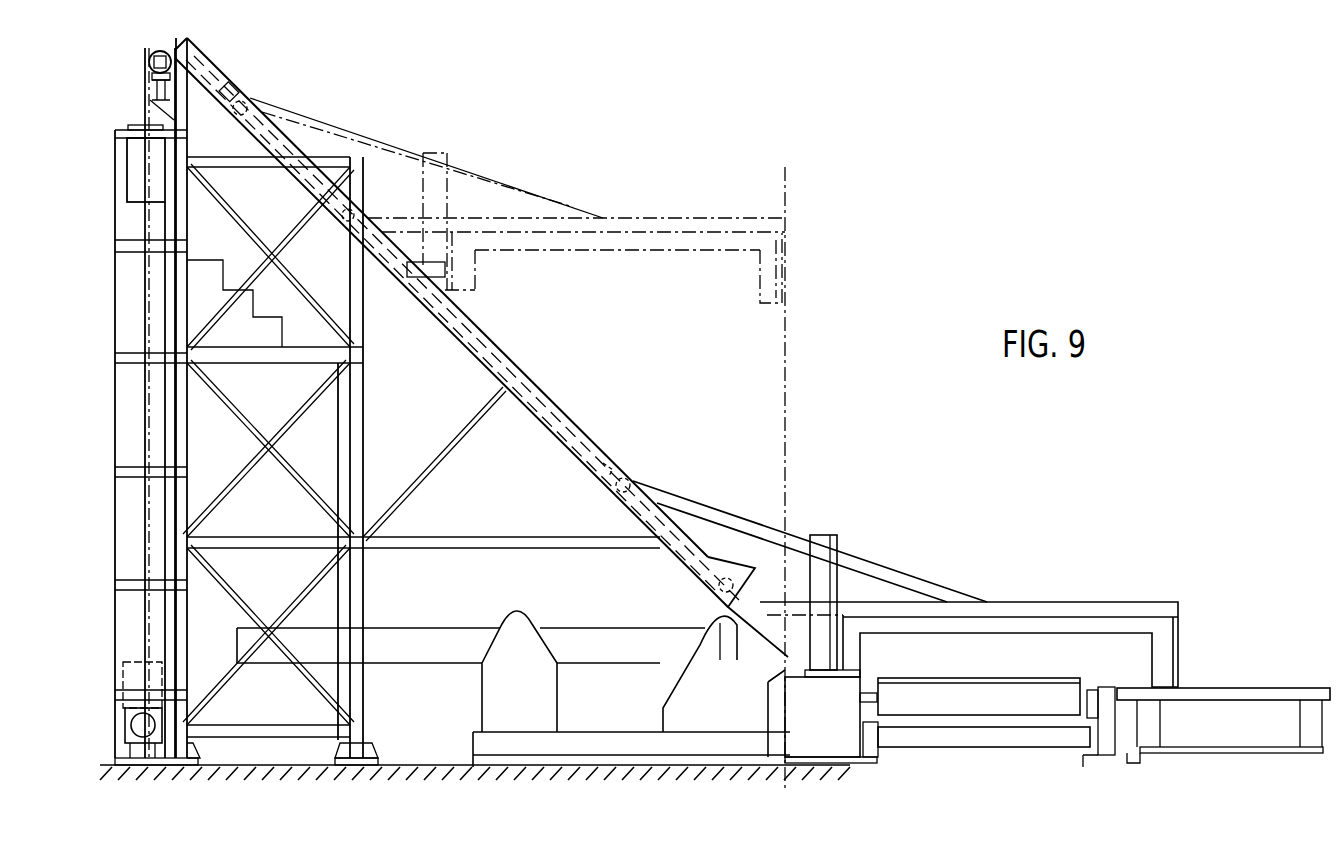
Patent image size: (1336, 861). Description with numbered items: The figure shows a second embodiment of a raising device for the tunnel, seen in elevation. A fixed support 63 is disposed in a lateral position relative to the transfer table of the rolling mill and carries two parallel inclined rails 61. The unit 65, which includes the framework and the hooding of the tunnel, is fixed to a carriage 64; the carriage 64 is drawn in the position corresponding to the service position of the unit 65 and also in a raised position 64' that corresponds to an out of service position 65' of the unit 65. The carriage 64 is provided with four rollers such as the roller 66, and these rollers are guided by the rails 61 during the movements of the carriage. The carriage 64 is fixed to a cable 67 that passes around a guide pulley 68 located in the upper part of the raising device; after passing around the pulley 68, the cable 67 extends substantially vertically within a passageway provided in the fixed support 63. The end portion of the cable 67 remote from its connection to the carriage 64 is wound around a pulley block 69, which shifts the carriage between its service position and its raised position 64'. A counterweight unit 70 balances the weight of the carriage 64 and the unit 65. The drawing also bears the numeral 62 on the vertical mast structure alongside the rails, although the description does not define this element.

The inclined rails 61 is at (562, 408).
The vertical mast 62 is at (130, 627).
The fixed support 63 is at (403, 548).
The carriage 64 is at (810, 578).
The raised position of the carriage 64' is at (517, 194).
The unit 65 is at (1045, 684).
The out of service position of the unit 65' is at (808, 268).
The rollers 66 is at (628, 478).
The cable 67 is at (150, 103).
The guide pulley 68 is at (157, 51).
The pulley block 69 is at (150, 722).
The counterweight unit 70 is at (165, 198).